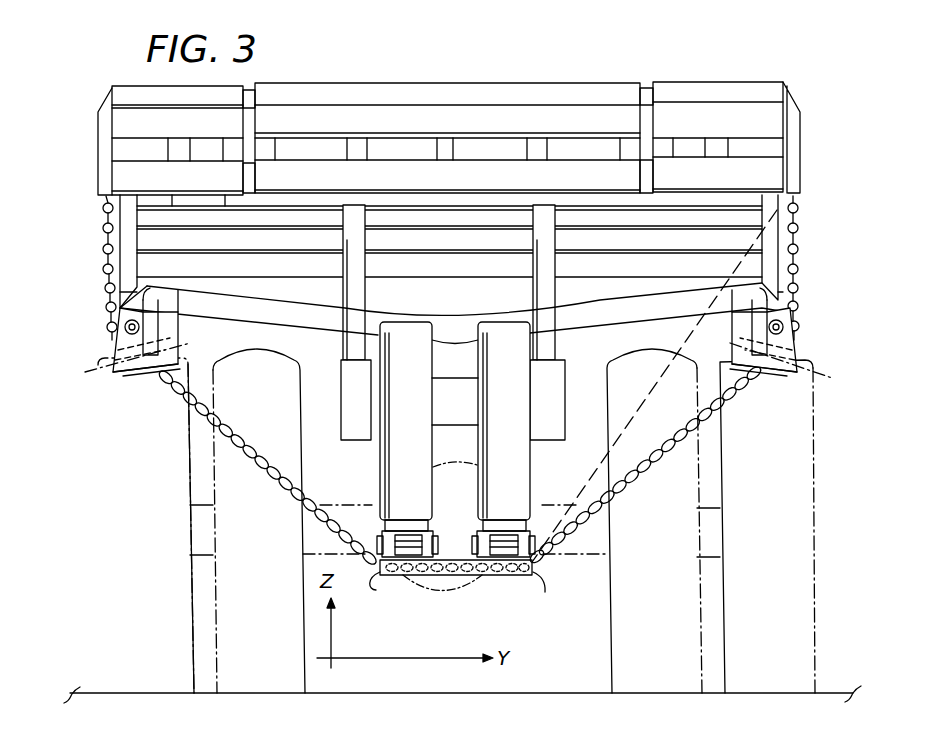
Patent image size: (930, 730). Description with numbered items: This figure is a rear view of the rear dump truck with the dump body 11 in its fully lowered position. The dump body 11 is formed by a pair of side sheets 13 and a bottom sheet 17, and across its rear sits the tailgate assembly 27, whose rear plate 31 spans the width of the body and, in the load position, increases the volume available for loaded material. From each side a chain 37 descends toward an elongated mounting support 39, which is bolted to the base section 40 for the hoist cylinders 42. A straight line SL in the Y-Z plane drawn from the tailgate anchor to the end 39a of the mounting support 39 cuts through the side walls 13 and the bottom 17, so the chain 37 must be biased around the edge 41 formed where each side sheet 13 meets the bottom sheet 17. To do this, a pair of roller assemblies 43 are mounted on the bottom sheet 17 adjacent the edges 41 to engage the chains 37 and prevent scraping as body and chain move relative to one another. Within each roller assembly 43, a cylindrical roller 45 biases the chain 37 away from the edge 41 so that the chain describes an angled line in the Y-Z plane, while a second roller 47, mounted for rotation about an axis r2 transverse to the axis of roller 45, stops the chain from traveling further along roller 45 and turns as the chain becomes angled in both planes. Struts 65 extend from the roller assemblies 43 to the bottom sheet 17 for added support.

The dump body 11 is at (440, 306).
The side sheets 13 is at (130, 237).
The bottom sheet 17 is at (420, 264).
The tailgate assembly 27 is at (449, 126).
The rear plate 31 is at (392, 80).
The chain 37 is at (106, 266).
The mounting support 39 is at (477, 577).
The end of the mounting support 39a is at (474, 592).
The base section 40 is at (410, 540).
The edge 41 is at (120, 292).
The hoist cylinders 42 is at (488, 377).
The roller assemblies 43 is at (117, 343).
The cylindrical roller 45 is at (150, 288).
The roller 47 is at (142, 372).
The struts 65 is at (153, 298).
The straight line SL is at (658, 380).
The axis of rotation for roller 47 r2 is at (190, 340).